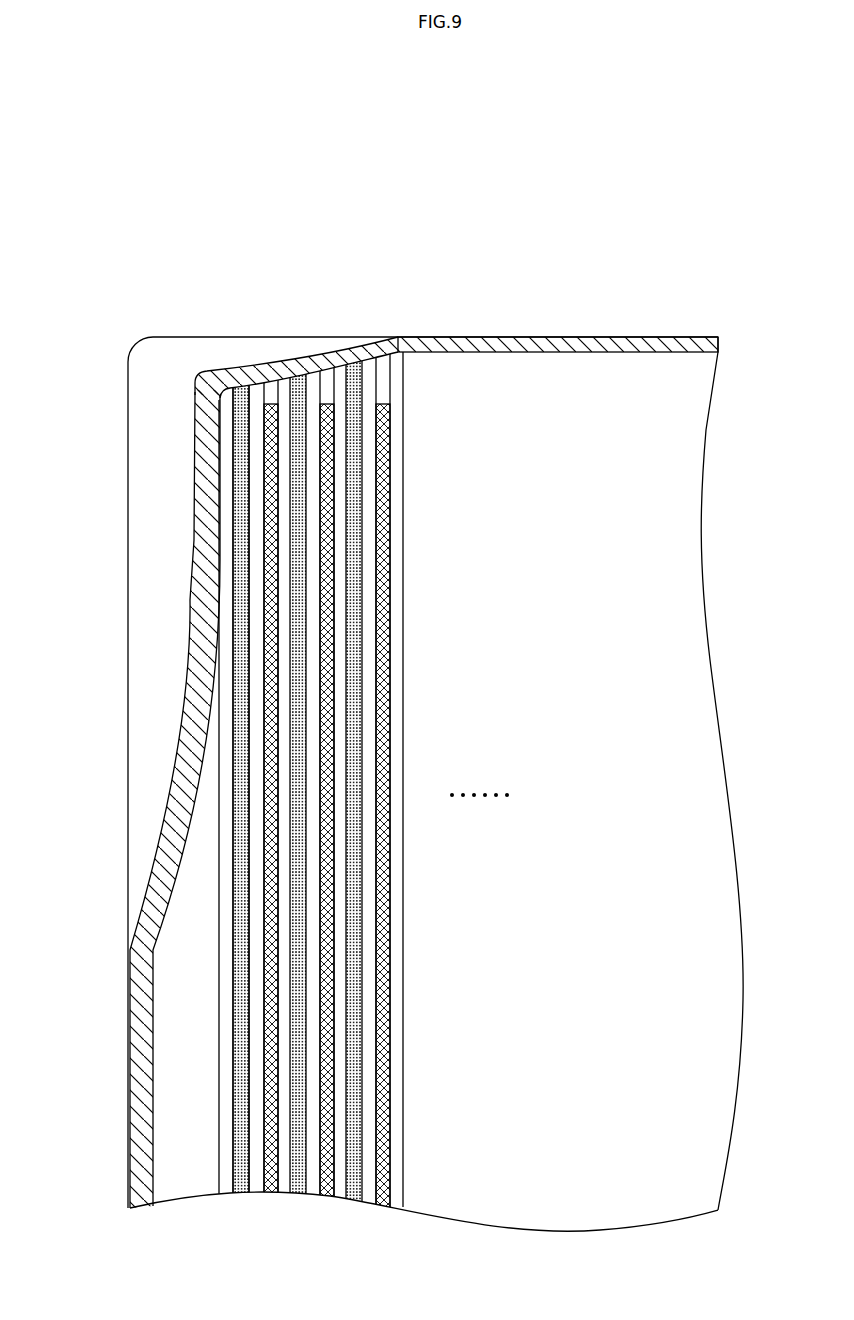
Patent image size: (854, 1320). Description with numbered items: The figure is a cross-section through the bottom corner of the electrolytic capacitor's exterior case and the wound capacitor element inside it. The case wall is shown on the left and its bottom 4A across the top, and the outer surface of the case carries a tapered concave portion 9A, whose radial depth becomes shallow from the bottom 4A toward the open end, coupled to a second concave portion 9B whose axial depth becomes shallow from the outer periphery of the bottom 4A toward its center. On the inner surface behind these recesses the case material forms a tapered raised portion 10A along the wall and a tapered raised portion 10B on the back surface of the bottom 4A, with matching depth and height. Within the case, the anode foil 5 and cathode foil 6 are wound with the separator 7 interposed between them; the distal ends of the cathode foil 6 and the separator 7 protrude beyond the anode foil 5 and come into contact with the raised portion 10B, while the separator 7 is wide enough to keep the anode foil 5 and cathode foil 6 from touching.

The bottom 4A is at (440, 338).
The anode foil 5 is at (268, 1193).
The cathode foil 6 is at (238, 1195).
The separator 7 is at (221, 1195).
The concave portion 9A is at (128, 613).
The concave portion 9B is at (246, 335).
The raised portion 10A is at (204, 757).
The raised portion 10B is at (338, 374).